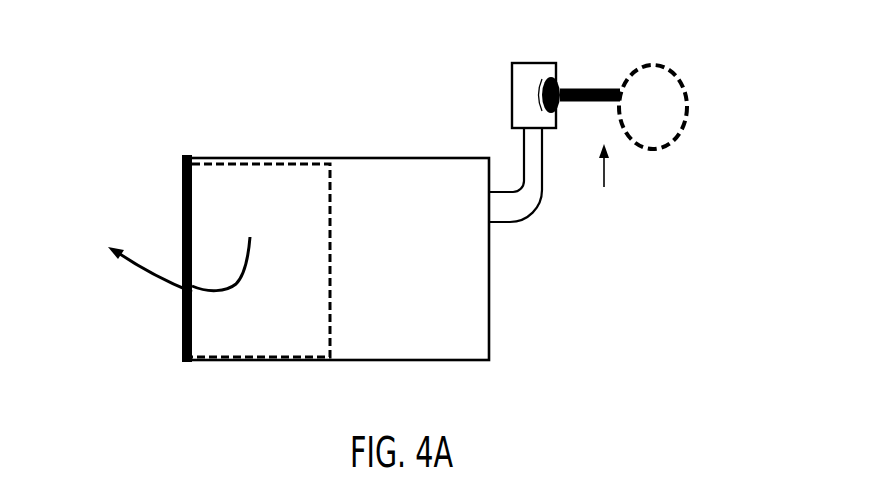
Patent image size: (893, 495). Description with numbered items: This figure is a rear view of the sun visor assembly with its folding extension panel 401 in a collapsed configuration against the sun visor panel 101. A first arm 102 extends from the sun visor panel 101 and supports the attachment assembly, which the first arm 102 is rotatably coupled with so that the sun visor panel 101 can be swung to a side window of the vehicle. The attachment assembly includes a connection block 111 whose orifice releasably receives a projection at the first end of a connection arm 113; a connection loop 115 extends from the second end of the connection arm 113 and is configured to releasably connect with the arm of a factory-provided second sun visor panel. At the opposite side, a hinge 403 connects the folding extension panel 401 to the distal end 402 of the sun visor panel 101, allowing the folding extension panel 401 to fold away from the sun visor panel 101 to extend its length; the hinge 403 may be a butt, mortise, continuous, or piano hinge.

The sun visor panel 101 is at (388, 233).
The first arm 102 is at (533, 208).
The connection block 111 is at (512, 100).
The connection arm 113 is at (605, 185).
The connection loop 115 is at (686, 106).
The folding extension panel 401 is at (285, 198).
The distal end 402 is at (192, 315).
The hinge 403 is at (182, 217).